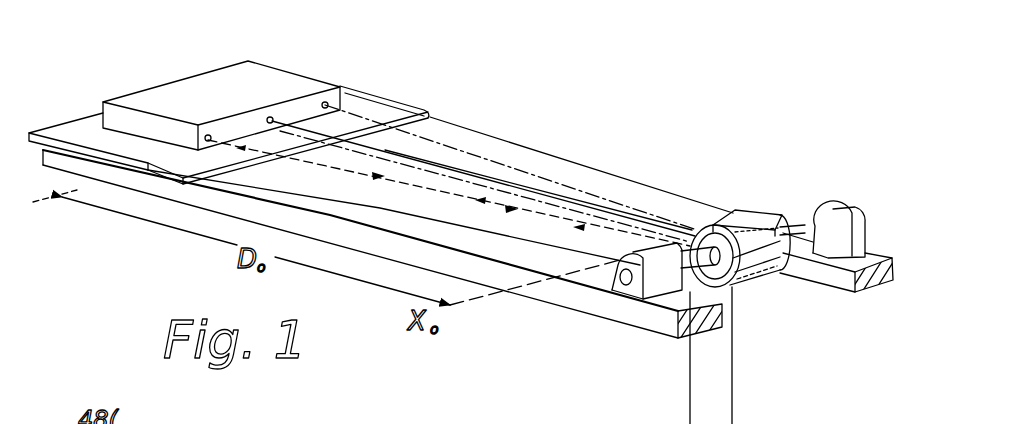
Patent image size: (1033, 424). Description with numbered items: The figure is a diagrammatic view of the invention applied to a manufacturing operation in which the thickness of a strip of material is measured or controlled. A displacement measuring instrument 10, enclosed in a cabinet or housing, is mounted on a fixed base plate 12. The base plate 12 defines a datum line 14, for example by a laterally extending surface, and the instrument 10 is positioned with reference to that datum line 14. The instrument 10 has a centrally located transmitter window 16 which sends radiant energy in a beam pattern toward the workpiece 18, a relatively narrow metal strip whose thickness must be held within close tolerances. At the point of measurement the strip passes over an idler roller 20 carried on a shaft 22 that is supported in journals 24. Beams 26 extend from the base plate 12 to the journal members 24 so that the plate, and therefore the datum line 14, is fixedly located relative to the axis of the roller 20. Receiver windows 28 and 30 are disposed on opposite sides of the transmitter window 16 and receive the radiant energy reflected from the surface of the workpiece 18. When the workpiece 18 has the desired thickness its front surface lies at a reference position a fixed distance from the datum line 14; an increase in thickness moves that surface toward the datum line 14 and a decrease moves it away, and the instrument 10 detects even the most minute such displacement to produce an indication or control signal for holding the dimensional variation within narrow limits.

The displacement measuring instrument 10 is at (300, 80).
The base plate 12 is at (408, 112).
The datum line 14 is at (368, 97).
The transmitter window 16 is at (266, 119).
The workpiece 18 is at (748, 217).
The idler roller 20 is at (747, 280).
The shaft 22 is at (710, 272).
The journals 24 is at (633, 293).
The beams 26 is at (580, 178).
The receiver window 28 is at (205, 135).
The receiver window 30 is at (321, 105).